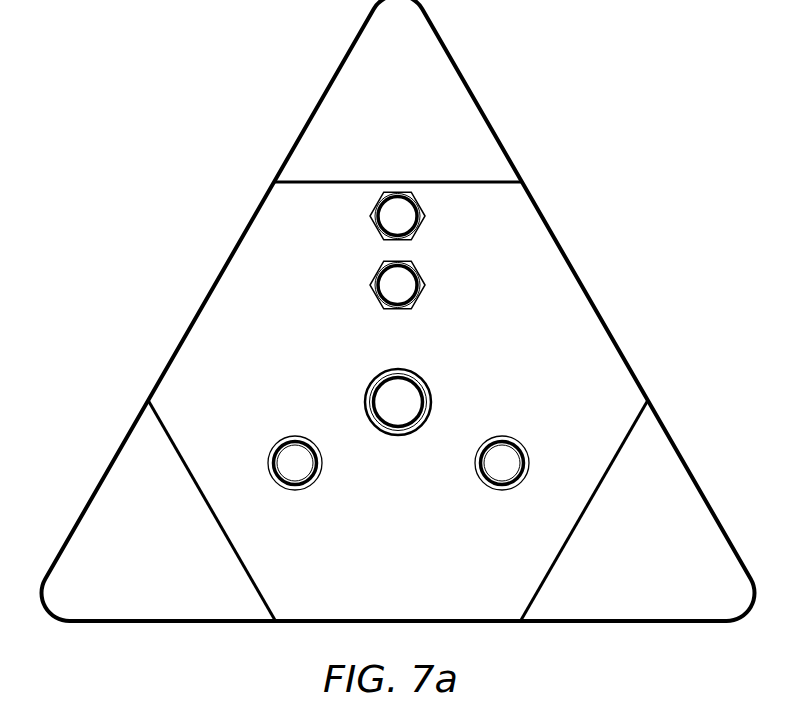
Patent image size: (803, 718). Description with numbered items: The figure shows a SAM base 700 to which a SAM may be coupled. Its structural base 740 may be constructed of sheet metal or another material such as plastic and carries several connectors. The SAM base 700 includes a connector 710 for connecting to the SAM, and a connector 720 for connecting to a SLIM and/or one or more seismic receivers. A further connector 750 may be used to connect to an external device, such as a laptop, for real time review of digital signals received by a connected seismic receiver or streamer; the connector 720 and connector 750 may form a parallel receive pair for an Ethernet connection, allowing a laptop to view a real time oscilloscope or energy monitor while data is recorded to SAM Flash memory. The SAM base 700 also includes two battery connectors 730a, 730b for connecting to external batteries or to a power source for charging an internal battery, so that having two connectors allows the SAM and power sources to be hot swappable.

The SAM base 700 is at (395, 332).
The connector 710 is at (430, 385).
The connector 720 is at (418, 293).
The battery connector 730a is at (283, 442).
The battery connector 730b is at (513, 442).
The base 740 is at (122, 620).
The connector 750 is at (418, 225).